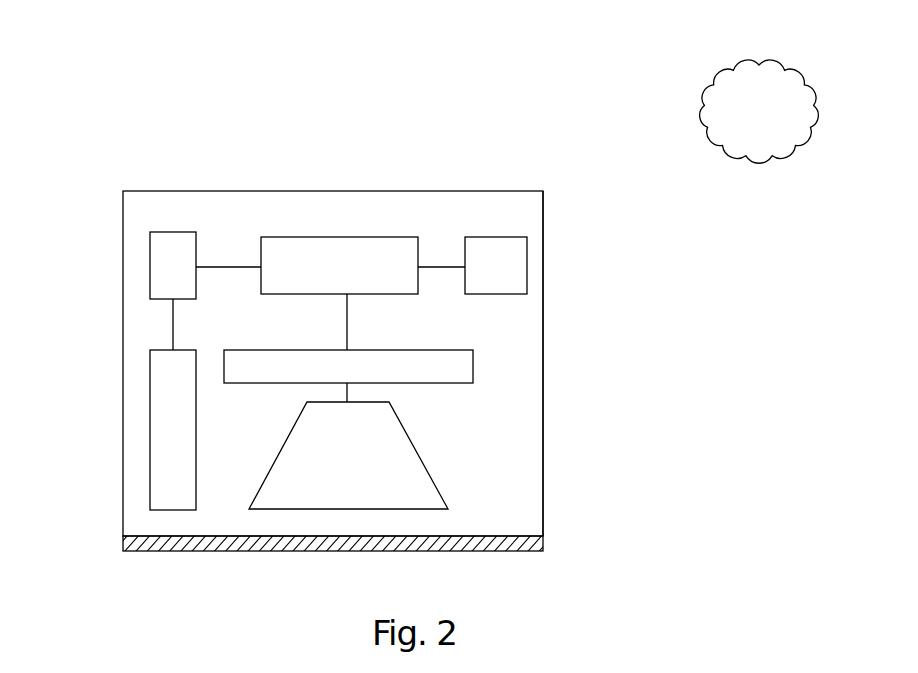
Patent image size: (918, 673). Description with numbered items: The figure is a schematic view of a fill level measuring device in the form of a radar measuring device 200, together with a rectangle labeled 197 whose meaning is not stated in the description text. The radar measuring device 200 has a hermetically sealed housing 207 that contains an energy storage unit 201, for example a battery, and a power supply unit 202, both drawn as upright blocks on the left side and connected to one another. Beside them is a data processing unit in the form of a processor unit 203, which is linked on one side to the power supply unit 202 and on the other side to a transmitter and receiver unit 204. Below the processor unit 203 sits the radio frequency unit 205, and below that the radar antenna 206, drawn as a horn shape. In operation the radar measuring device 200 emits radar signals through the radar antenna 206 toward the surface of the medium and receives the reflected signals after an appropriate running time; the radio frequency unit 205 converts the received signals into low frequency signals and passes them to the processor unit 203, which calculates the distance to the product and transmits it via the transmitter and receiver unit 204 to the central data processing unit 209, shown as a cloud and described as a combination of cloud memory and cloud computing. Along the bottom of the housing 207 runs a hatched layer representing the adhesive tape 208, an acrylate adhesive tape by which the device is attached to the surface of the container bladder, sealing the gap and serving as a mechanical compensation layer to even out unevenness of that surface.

The housing 197 is at (421, 191).
The radar measuring device 200 is at (355, 374).
The energy storage unit 201 is at (150, 432).
The power supply unit 202 is at (150, 283).
The processor unit 203 is at (310, 237).
The transmitter and receiver unit 204 is at (527, 250).
The radio frequency unit 205 is at (473, 360).
The radar antenna 206 is at (422, 458).
The housing 207 is at (546, 497).
The adhesive tape 208 is at (190, 542).
The central data processing unit 209 is at (784, 60).